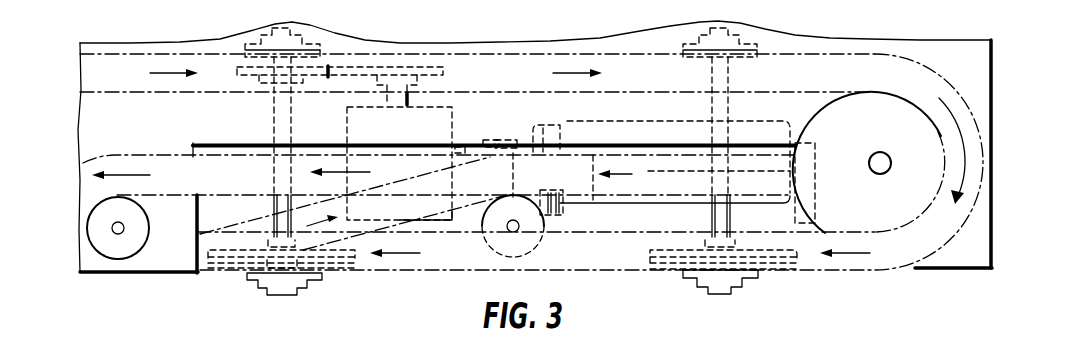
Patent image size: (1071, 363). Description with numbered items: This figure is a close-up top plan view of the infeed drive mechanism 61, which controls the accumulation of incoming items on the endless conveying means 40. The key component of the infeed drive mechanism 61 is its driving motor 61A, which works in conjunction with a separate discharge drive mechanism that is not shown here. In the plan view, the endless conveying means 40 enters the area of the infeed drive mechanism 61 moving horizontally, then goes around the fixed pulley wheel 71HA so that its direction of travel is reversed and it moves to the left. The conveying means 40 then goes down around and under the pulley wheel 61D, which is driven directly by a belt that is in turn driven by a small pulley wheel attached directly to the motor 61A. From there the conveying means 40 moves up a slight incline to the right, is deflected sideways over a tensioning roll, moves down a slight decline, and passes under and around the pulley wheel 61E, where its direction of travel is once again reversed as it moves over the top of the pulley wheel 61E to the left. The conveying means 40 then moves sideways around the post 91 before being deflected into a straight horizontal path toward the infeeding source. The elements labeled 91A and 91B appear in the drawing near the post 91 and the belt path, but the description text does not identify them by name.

The endless conveying means 40 is at (183, 58).
The infeed drive mechanism 61 is at (357, 286).
The driving motor 61A is at (568, 128).
The pulley wheel 61D is at (227, 257).
The pulley wheel 61E is at (772, 258).
The post 91 is at (135, 230).
The intermediate pulley 91A is at (483, 218).
The pulley bearing block 91B is at (574, 216).
The fixed pulley wheel 71HA is at (893, 128).